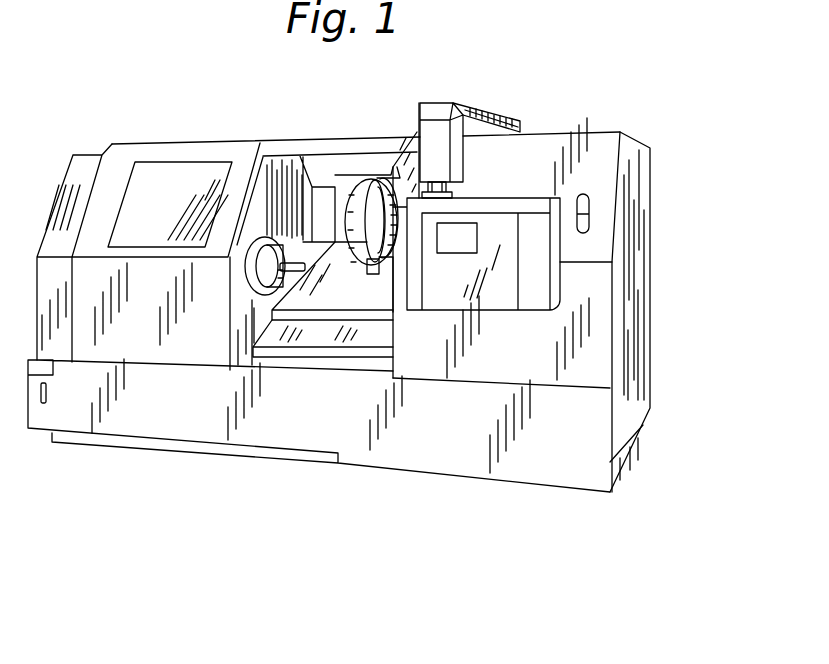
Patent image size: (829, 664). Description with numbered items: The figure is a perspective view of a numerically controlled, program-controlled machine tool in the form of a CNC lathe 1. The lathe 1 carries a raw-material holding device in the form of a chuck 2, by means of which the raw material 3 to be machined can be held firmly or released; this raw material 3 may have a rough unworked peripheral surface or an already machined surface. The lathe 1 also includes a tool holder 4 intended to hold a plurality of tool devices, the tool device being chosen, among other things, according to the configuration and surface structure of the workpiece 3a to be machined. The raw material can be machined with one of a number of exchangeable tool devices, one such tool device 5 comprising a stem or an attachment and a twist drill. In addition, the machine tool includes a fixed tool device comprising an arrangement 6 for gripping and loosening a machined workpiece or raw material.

The CNC lathe 1 is at (618, 130).
The chuck 2 is at (262, 257).
The raw material 3 is at (308, 210).
The workpiece 3a is at (338, 238).
The tool holder 4 is at (374, 176).
The tool device 5 is at (349, 266).
The arrangement for gripping and loosening a machined workpiece or raw material 6 is at (348, 192).